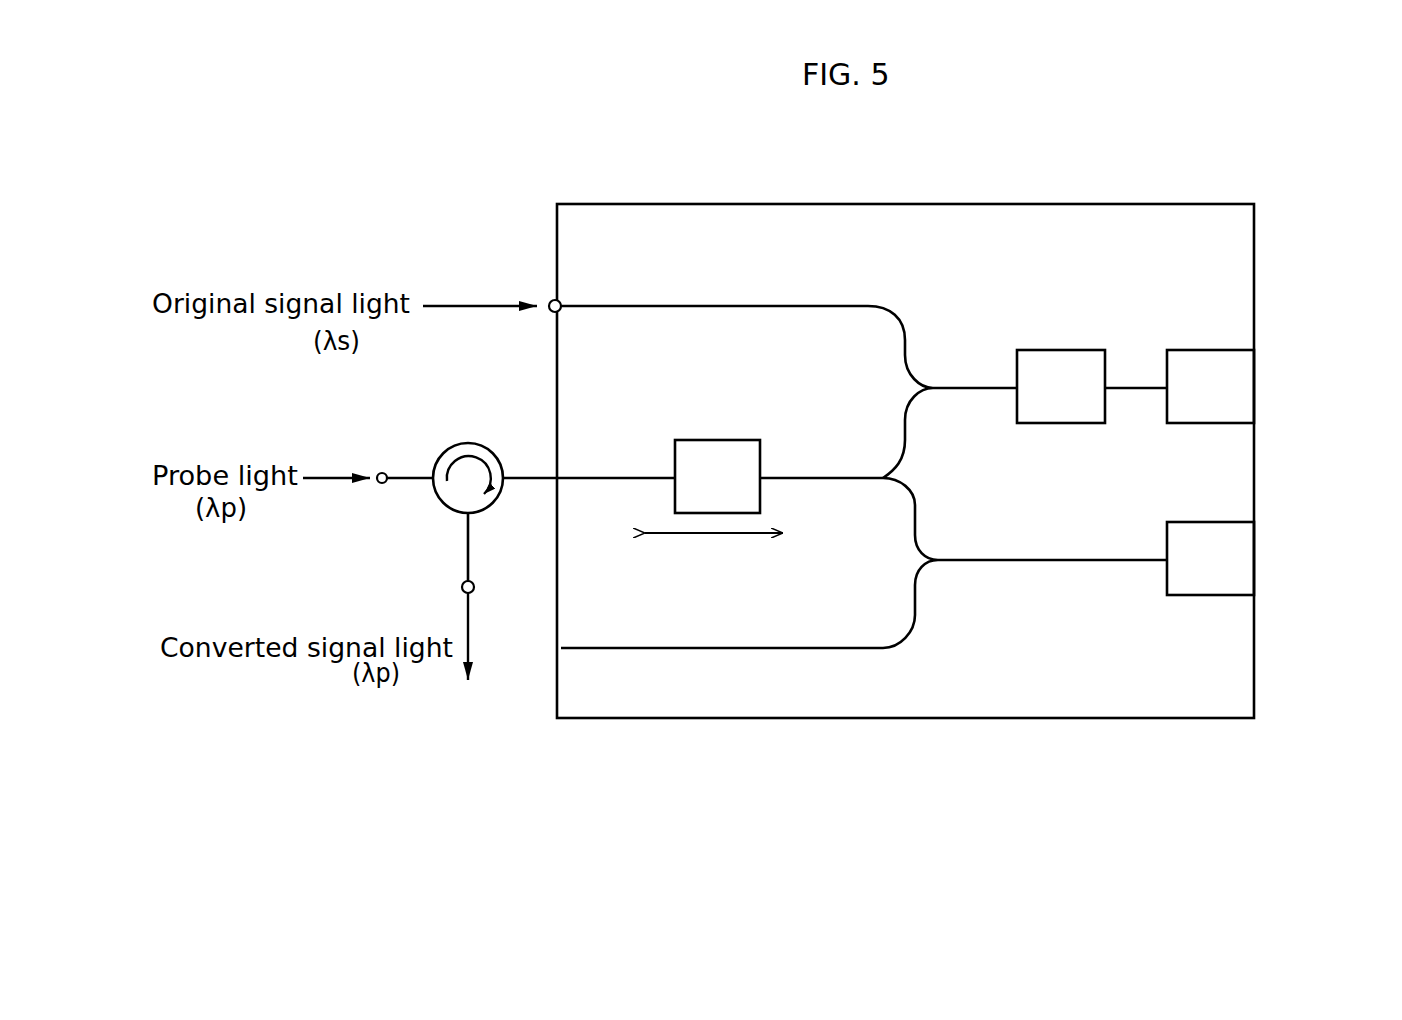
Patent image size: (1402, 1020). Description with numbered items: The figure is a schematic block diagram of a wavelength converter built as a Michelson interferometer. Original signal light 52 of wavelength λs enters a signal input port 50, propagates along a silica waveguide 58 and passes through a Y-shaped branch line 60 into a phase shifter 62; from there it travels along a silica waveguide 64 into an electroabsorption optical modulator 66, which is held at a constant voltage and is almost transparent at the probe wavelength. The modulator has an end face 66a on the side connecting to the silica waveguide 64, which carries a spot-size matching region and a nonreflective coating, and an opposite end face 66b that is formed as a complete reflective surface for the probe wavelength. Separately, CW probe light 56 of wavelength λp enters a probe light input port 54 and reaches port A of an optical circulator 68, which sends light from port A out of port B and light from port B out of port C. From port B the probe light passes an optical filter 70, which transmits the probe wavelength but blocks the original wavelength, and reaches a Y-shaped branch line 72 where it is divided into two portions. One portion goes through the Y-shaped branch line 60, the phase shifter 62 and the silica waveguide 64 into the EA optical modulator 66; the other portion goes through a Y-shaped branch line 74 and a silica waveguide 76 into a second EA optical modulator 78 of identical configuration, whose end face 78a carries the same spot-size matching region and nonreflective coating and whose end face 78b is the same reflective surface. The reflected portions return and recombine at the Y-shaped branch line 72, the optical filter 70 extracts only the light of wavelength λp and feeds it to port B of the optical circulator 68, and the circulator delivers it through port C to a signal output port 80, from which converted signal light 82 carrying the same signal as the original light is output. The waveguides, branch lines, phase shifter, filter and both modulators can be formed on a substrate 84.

The signal input port 50 is at (550, 301).
The original signal light 52 is at (458, 305).
The probe light input port 54 is at (387, 485).
The probe light 56 is at (328, 477).
The silica waveguide 58 is at (722, 304).
The Y-shaped branch line 60 is at (920, 387).
The phase shifter 62 is at (1057, 366).
The silica waveguide 64 is at (1133, 393).
The electroabsorption (EA) optical modulator 66 is at (1208, 365).
The end face 66a is at (1165, 370).
The end face 66b is at (1257, 387).
The optical circulator 68 is at (468, 443).
The optical filter 70 is at (720, 445).
The Y-shaped branch line 72 is at (907, 470).
The Y-shaped branch line 74 is at (925, 558).
The silica waveguide 76 is at (1043, 562).
The electroabsorption (EA) optical modulator 78 is at (1212, 530).
The end face 78a is at (1165, 545).
The end face 78b is at (1257, 559).
The signal output port 80 is at (475, 584).
The converted signal light 82 is at (471, 637).
The substrate 84 is at (985, 712).